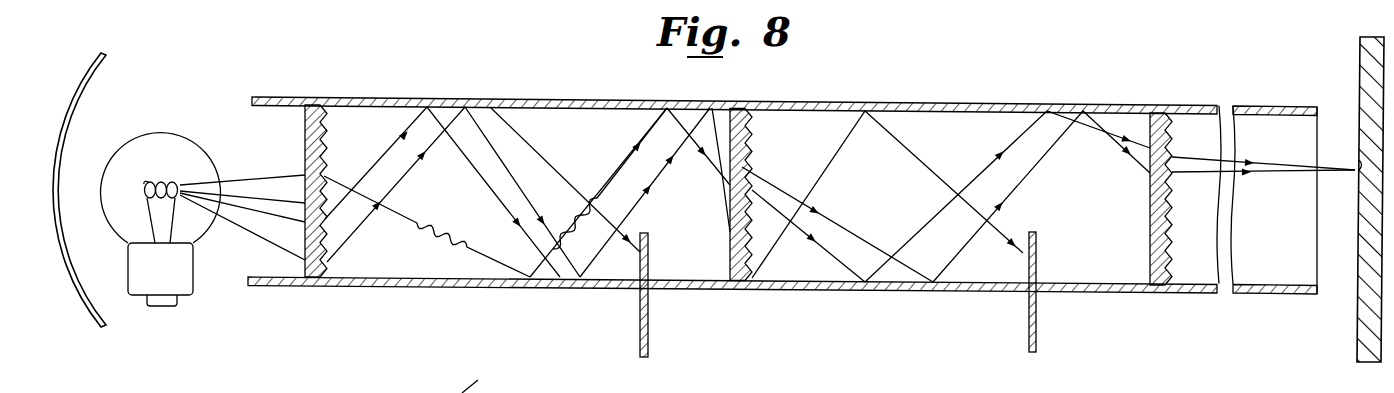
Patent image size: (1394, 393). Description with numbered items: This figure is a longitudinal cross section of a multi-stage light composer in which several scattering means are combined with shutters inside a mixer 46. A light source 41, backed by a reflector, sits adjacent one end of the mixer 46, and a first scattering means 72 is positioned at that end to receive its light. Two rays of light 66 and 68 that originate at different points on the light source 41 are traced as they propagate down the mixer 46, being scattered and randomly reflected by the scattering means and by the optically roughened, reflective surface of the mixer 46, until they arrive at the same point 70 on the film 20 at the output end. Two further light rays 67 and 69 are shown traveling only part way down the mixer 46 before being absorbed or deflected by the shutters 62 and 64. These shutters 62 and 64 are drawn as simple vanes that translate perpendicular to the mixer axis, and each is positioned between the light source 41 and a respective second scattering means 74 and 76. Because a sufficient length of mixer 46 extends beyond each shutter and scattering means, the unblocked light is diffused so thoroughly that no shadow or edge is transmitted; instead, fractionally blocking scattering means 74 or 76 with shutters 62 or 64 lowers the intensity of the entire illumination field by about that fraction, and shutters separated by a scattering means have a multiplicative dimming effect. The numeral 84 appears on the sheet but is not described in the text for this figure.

The film 20 is at (1365, 325).
The light source 41 is at (167, 197).
The mixer 46 is at (565, 97).
The shutter 62 is at (638, 322).
The shutter 64 is at (1027, 328).
The ray of light 66 is at (224, 236).
The light ray 67 is at (278, 172).
The ray of light 68 is at (227, 196).
The light ray 69 is at (255, 222).
The point on film 70 is at (1358, 165).
The first scattering means 72 is at (305, 280).
The second scattering means 74 is at (735, 286).
The second scattering means 76 is at (1162, 285).
The louver 84 is at (832, 373).